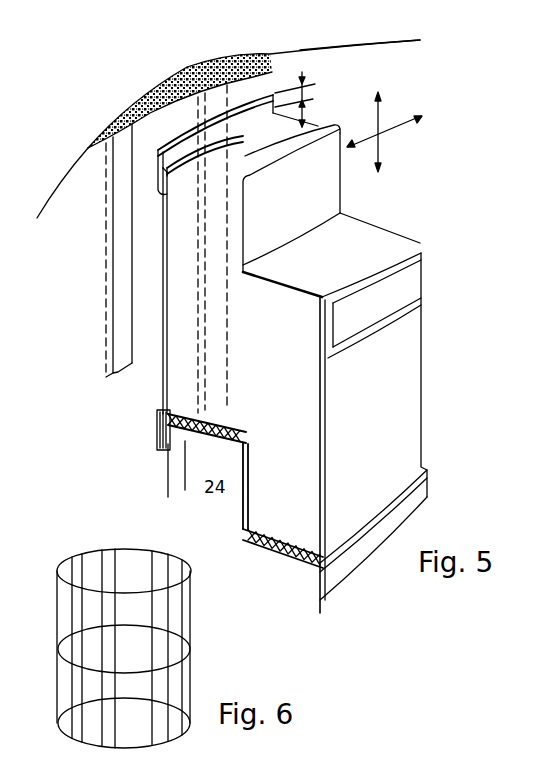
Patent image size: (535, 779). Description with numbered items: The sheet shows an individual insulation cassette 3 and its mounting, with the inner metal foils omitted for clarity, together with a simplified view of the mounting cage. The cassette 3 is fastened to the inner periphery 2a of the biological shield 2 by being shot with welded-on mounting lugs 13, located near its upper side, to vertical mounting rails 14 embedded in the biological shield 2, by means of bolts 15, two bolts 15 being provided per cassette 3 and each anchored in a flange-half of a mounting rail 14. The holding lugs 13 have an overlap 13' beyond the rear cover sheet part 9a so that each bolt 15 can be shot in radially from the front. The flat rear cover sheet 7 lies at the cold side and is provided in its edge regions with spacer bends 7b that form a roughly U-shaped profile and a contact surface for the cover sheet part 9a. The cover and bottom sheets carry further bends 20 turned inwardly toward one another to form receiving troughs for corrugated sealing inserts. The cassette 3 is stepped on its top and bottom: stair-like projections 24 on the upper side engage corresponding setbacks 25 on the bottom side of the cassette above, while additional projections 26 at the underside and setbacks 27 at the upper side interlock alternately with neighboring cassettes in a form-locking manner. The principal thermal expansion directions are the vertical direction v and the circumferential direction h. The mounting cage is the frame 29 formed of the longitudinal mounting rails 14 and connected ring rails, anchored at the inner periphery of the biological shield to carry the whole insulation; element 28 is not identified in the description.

In FIG. 5, the biological shield 2 is at (56, 181).
In FIG. 5, the inner periphery of the biological shield 2a is at (314, 58).
In FIG. 5, the cassette 3 is at (418, 329).
In FIG. 5, the rear cover sheet 7 is at (164, 288).
In FIG. 5, the spacer bend 7b is at (180, 174).
In FIG. 5, the rear cover sheet part 9a is at (306, 127).
In FIG. 5, the mounting lug 13 is at (152, 187).
In FIG. 5, the overlap 13' is at (309, 99).
In FIG. 5, the mounting rail 14 is at (107, 259).
In FIG. 6, the mounting rail 14 is at (192, 594).
In FIG. 5, the bolt 15 is at (210, 127).
In FIG. 5, the bend 20 is at (346, 121).
In FIG. 5, the stair-like projection 24 is at (331, 213).
In FIG. 5, the stair-like setback 25 is at (249, 432).
In FIG. 5, the stair-like projection 26 is at (348, 433).
In FIG. 5, the stair-like setback 27 is at (384, 194).
In FIG. 6, the cylindrical column 28 is at (60, 570).
In FIG. 6, the frame 29 is at (228, 622).
In FIG. 5, the vertical direction v is at (386, 132).
In FIG. 5, the circumferential direction h is at (384, 136).